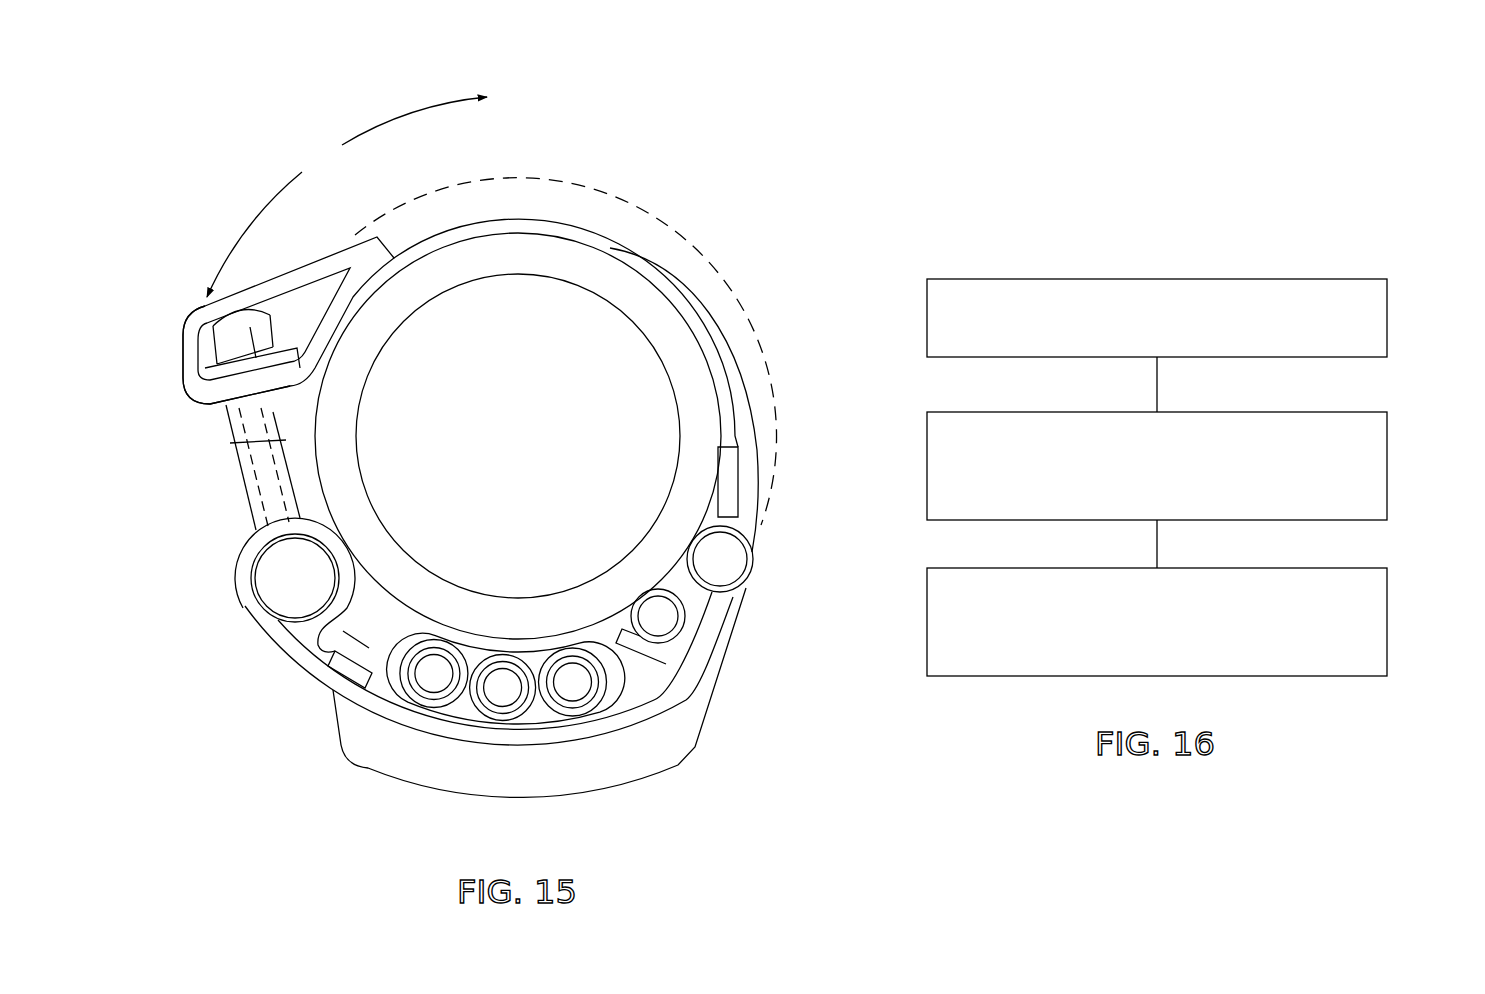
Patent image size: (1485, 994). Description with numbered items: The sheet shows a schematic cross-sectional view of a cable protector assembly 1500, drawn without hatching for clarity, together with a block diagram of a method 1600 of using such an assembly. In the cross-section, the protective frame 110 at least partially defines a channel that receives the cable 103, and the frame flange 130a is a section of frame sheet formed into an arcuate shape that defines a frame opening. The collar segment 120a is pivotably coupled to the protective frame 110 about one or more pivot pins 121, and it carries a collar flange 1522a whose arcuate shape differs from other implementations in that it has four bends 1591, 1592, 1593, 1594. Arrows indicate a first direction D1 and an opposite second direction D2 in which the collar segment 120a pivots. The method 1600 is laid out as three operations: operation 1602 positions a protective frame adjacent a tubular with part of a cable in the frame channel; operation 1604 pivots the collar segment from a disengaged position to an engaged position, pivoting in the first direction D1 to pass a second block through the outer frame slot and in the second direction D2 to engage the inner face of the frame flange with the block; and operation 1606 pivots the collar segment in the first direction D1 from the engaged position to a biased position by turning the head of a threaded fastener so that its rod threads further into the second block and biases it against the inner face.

In FIG. 15, the cable protector assembly 1500 is at (487, 446).
In FIG. 15, the collar segment 120a is at (660, 256).
In FIG. 15, the protective frame 110 is at (622, 765).
In FIG. 15, the frame flange 130a is at (228, 603).
In FIG. 15, the pivot pin 121 is at (717, 560).
In FIG. 15, the cable 103 is at (465, 720).
In FIG. 15, the bend 1594 is at (330, 268).
In FIG. 15, the bend 1593 is at (200, 310).
In FIG. 15, the bend 1592 is at (192, 402).
In FIG. 15, the collar flange 1522a is at (240, 428).
In FIG. 15, the bend 1591 is at (318, 386).
In FIG. 15, the first direction D1 is at (233, 240).
In FIG. 15, the second direction D2 is at (430, 107).
In FIG. 16, the method 1600 is at (1196, 436).
In FIG. 16, the operation 1602 is at (1388, 294).
In FIG. 16, the operation 1604 is at (1388, 427).
In FIG. 16, the operation 1606 is at (1388, 583).